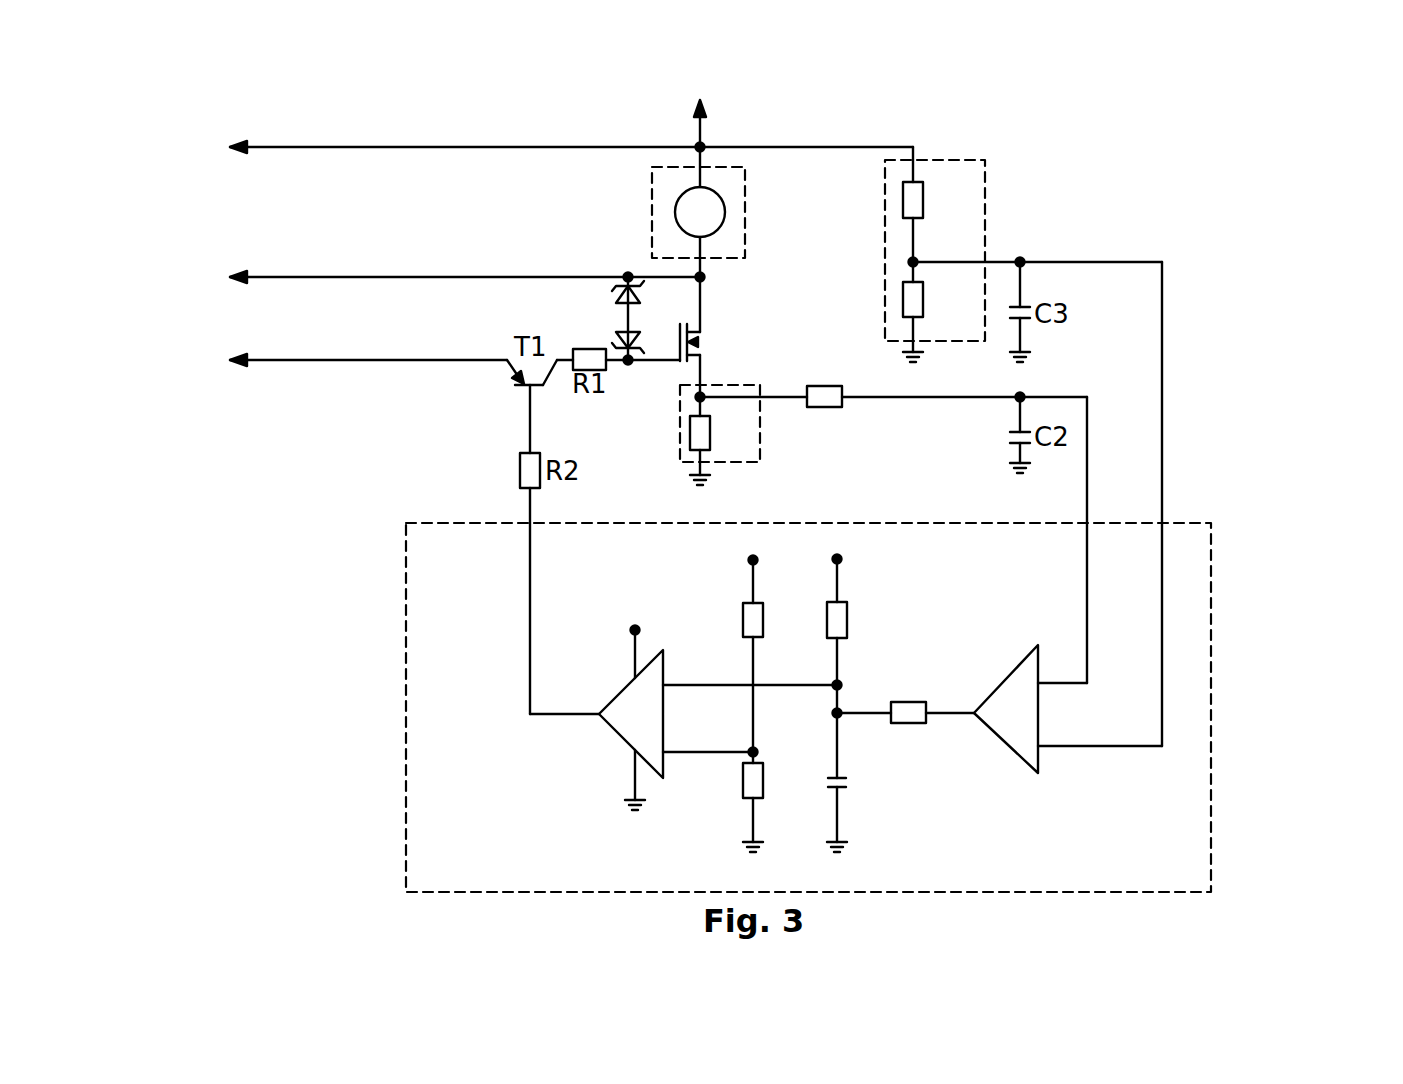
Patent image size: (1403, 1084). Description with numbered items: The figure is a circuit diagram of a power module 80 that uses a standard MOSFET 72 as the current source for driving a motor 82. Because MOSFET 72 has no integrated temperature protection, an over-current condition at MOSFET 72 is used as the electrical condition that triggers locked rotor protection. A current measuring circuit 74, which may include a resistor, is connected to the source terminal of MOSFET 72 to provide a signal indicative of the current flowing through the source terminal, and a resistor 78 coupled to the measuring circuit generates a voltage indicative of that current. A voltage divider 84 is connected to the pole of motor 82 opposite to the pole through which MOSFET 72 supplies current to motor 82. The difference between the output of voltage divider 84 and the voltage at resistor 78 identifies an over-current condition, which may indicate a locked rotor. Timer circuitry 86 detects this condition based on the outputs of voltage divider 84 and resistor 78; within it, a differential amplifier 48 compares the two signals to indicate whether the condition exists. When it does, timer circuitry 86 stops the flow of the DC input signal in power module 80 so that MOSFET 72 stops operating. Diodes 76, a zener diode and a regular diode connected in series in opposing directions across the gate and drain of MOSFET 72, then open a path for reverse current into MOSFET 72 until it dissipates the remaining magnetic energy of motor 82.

The power module 80 is at (1226, 206).
The motor 82 is at (652, 200).
The voltage divider 84 is at (985, 207).
The diodes 76 is at (566, 311).
The MOSFET 72 is at (683, 364).
The current measuring circuit 74 is at (760, 450).
The resistor 78 is at (823, 386).
The timer circuitry 86 is at (752, 707).
The differential amplifier 48 is at (1006, 746).